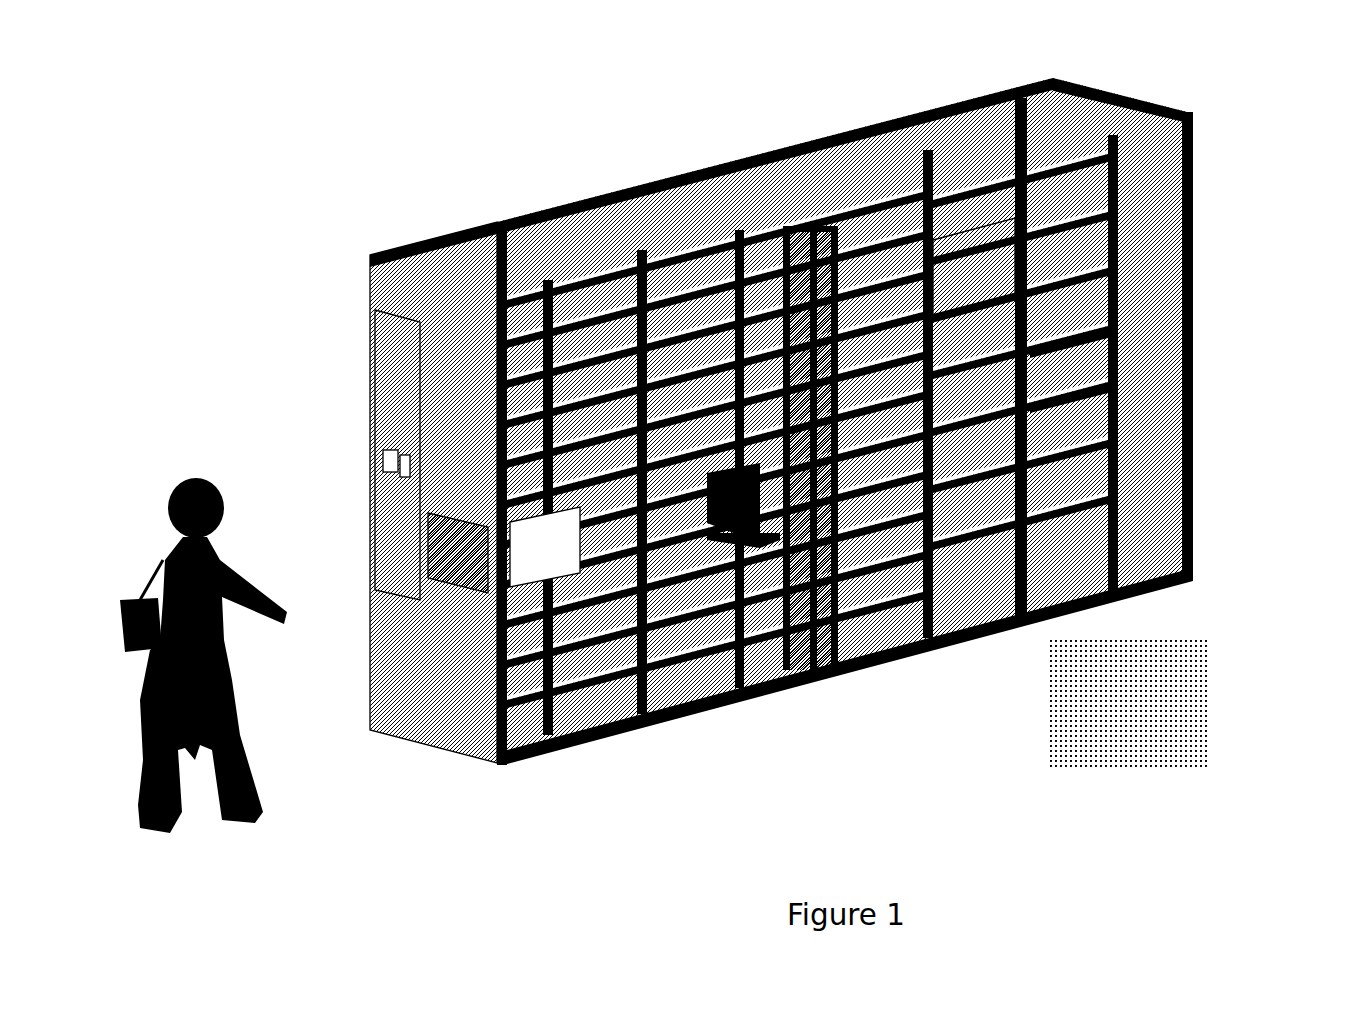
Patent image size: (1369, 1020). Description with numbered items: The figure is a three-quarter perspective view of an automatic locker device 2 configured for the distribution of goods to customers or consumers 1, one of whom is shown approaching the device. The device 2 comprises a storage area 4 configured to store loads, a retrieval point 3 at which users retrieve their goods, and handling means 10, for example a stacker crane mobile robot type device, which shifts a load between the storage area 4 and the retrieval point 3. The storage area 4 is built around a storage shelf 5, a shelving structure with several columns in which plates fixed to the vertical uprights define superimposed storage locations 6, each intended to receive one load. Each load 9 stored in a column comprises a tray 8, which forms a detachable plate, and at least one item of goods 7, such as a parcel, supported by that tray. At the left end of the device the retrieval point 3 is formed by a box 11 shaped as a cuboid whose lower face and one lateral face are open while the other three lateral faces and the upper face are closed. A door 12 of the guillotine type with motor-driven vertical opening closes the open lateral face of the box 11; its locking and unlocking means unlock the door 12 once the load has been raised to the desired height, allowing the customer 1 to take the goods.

The customer 1 is at (205, 845).
The automatic locker device 2 is at (670, 153).
The retrieval point 3 is at (362, 272).
The storage area 4 is at (938, 93).
The storage shelf 5 is at (1190, 257).
The storage location 6 is at (940, 250).
The item of goods 7 is at (1080, 357).
The tray 8 is at (1090, 400).
The load 9 is at (1307, 293).
The handling means 10 is at (810, 660).
The box 11 is at (522, 570).
The door 12 is at (462, 567).